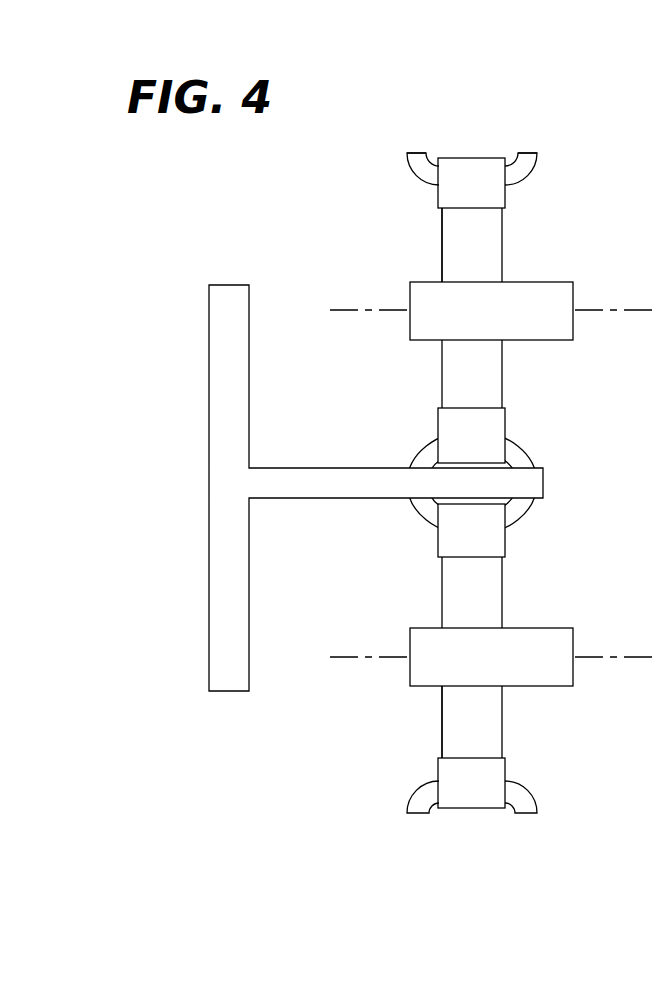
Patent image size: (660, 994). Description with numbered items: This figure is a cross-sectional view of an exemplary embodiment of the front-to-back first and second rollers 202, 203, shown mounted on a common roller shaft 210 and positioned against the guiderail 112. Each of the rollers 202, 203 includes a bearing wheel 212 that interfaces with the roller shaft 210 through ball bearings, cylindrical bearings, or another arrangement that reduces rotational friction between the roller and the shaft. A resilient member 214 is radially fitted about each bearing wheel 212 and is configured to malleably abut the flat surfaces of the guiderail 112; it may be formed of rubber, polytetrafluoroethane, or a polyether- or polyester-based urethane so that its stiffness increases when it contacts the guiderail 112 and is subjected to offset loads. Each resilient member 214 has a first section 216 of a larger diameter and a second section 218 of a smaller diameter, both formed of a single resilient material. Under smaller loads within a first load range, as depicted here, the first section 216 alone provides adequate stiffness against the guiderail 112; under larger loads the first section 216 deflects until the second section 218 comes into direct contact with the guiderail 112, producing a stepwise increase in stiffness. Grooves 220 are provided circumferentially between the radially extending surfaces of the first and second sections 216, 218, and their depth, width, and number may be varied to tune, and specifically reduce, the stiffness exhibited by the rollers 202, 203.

The guiderail 112 is at (233, 595).
The first roller 202 is at (341, 199).
The second roller 203 is at (326, 752).
The roller shaft 210 is at (425, 327).
The bearing wheel 212 is at (487, 370).
The resilient member 214 is at (477, 207).
The first section 216 is at (420, 154).
The second section 218 is at (467, 159).
The grooves 220 is at (440, 170).